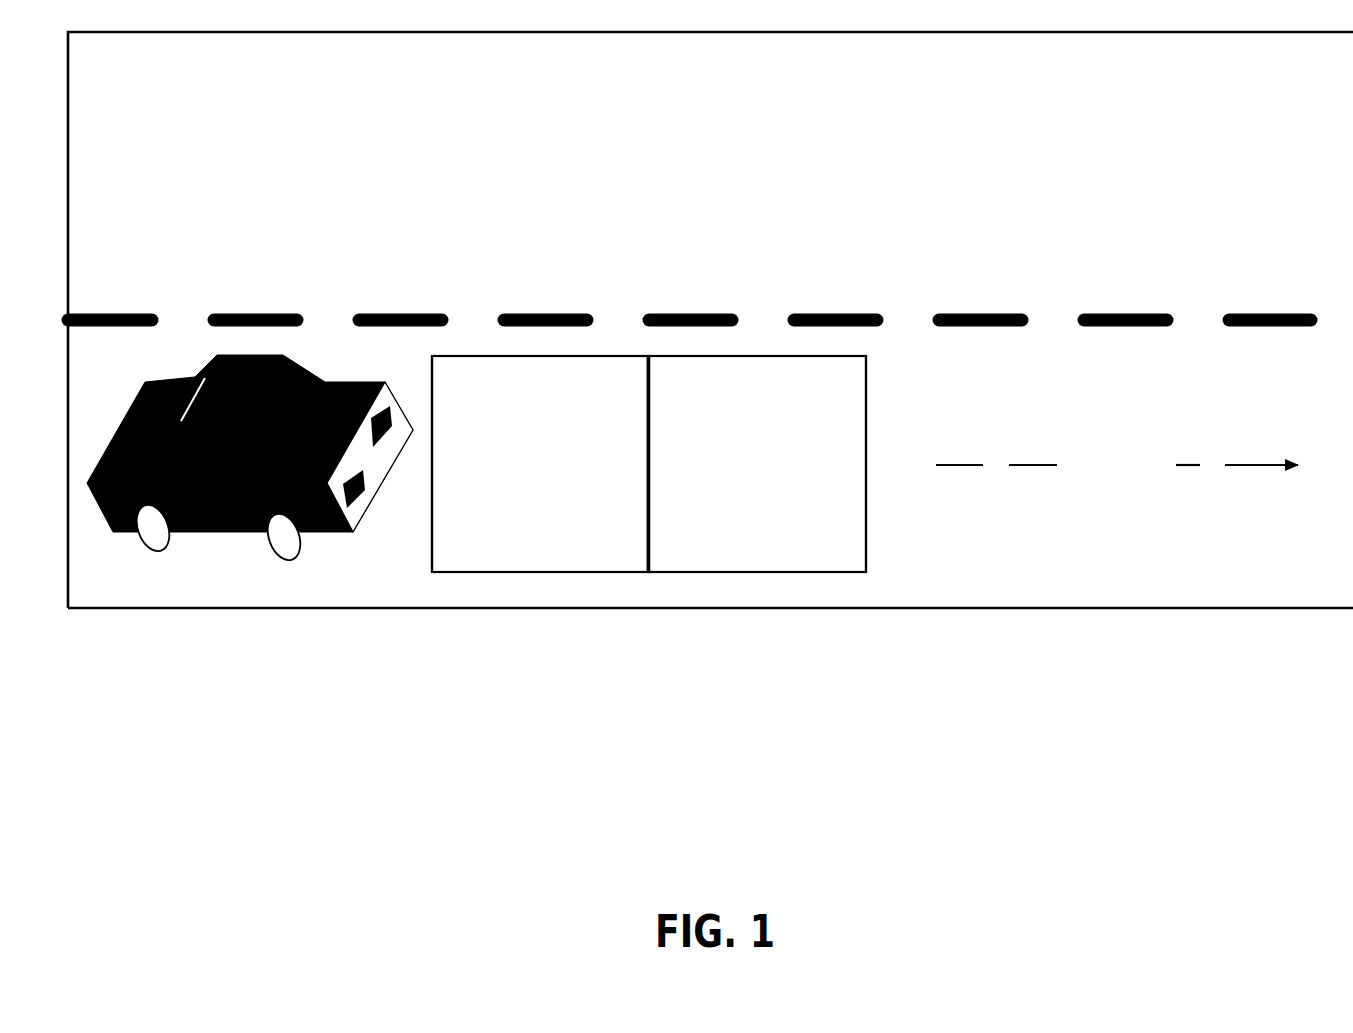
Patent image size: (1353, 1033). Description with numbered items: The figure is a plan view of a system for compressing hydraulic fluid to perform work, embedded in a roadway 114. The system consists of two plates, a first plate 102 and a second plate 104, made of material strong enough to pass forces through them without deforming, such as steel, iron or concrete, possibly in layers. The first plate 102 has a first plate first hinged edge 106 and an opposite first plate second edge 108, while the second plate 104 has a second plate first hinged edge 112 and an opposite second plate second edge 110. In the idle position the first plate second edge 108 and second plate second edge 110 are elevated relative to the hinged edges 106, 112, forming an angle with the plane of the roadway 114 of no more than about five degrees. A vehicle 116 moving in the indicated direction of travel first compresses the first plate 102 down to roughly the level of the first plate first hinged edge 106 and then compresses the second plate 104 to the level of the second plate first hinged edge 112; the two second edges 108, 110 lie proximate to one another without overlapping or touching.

The first plate 102 is at (540, 464).
The second plate 104 is at (757, 464).
The first plate first hinged edge 106 is at (428, 524).
The first plate second edge 108 is at (646, 540).
The second plate second edge 110 is at (651, 505).
The second plate first hinged edge 112 is at (868, 506).
The roadway 114 is at (710, 320).
The vehicle 116 is at (198, 533).